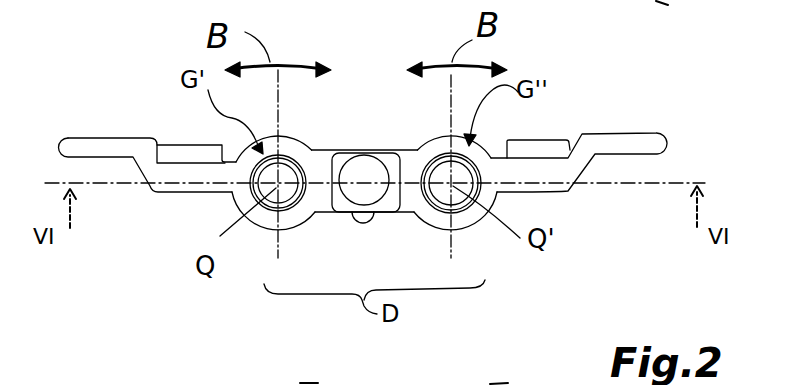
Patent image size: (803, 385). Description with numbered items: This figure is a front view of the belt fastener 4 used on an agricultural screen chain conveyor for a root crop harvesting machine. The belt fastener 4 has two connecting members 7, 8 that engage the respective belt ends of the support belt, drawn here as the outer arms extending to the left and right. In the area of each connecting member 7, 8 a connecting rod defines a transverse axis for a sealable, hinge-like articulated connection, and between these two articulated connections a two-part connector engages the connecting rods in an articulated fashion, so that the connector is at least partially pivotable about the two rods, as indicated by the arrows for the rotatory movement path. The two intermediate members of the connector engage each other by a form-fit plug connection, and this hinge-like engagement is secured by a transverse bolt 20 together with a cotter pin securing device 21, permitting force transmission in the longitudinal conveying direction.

The belt fastener 4 is at (165, 242).
The connecting member 7 is at (657, 150).
The connecting member 8 is at (73, 147).
The transverse bolt 20 is at (358, 187).
The cotter pin securing device 21 is at (372, 222).